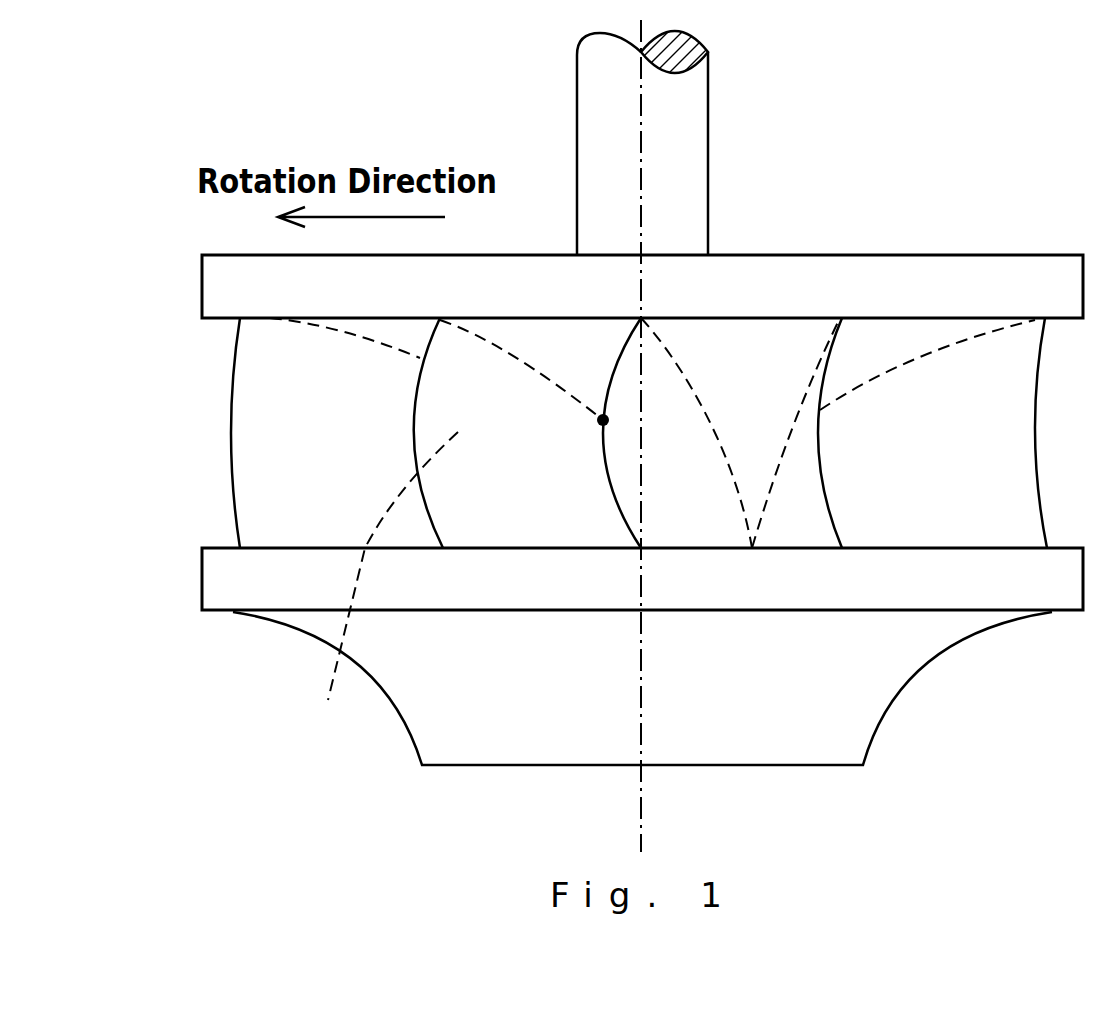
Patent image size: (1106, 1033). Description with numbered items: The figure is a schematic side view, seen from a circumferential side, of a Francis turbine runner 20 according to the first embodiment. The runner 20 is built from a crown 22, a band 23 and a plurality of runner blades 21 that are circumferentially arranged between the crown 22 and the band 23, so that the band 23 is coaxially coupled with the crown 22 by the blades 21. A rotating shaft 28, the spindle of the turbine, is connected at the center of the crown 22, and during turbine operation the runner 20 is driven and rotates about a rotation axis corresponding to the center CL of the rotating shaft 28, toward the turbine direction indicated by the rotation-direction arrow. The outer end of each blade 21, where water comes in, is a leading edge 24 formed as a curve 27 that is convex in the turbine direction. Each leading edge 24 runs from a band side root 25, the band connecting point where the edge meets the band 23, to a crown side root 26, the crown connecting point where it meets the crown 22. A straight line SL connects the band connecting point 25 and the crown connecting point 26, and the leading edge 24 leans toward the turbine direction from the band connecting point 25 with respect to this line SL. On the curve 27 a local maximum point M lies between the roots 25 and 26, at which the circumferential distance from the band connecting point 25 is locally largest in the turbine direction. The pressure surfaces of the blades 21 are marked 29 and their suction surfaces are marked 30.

The Francis turbine runner 20 is at (958, 195).
The runner blade 21 is at (283, 502).
The crown 22 is at (1018, 282).
The band 23 is at (909, 656).
The leading edge 24 is at (415, 415).
The band side root 25 is at (641, 548).
The crown side root 26 is at (641, 318).
The curve 27 is at (582, 488).
The rotating shaft 28 is at (708, 193).
The pressure surface 29 is at (463, 500).
The suction surface 30 is at (380, 594).
The center of rotating shaft CL is at (641, 117).
The straight line SL is at (645, 478).
The local maximum point M is at (597, 422).